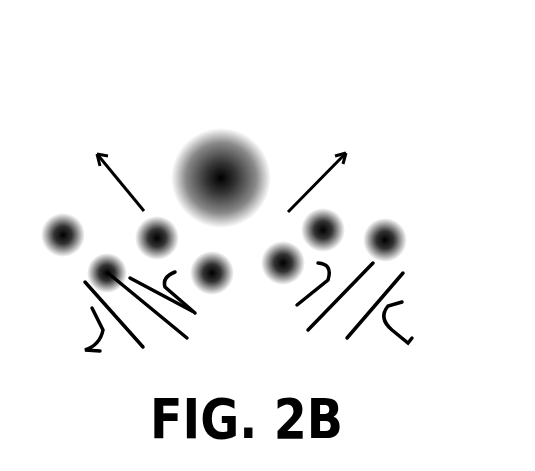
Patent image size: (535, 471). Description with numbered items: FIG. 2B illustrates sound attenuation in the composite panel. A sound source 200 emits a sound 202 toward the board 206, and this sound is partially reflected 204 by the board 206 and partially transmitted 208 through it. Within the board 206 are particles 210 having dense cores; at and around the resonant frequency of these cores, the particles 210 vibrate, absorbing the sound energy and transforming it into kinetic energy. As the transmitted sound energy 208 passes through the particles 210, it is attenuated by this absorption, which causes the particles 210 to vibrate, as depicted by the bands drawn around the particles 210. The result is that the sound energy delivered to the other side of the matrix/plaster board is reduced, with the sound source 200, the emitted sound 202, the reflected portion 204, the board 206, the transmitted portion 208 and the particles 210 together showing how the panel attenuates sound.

The sound source 200 is at (228, 165).
The sound 202 is at (262, 170).
The reflected sound 204 is at (118, 177).
The board 206 is at (363, 210).
The transmitted sound 208 is at (402, 270).
The particles 210 is at (62, 233).